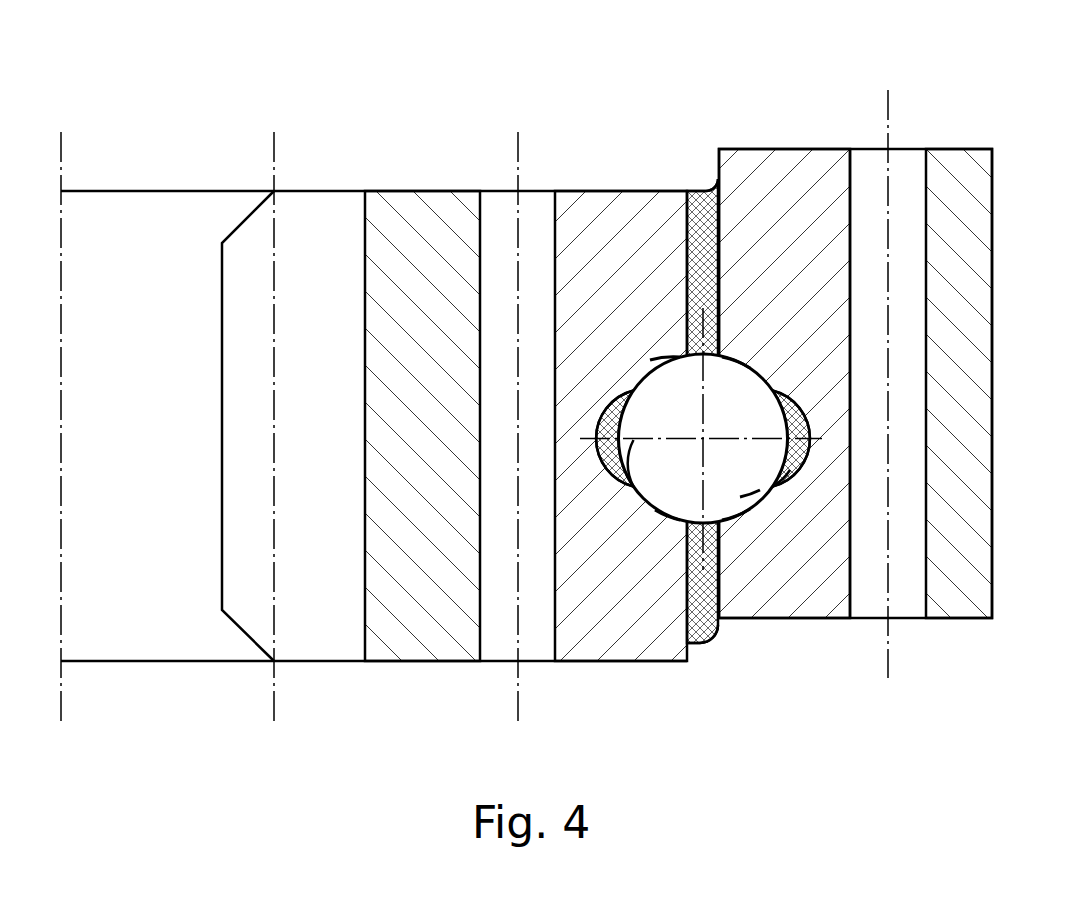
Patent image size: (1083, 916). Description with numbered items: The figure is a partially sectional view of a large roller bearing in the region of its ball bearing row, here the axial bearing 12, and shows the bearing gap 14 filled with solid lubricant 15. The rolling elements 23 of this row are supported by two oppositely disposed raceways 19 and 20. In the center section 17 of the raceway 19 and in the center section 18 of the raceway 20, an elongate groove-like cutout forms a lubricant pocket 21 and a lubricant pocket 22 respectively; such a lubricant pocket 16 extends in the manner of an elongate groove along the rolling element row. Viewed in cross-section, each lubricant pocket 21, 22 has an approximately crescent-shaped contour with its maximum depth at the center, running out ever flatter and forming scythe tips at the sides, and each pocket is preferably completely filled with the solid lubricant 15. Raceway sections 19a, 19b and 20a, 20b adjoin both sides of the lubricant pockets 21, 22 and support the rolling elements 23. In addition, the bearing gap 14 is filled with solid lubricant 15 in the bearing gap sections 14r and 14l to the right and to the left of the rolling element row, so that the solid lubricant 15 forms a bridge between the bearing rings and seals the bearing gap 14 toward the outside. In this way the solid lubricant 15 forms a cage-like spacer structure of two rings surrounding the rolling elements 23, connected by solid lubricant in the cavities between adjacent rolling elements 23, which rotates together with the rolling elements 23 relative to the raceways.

The axial bearing 12 is at (763, 363).
The bearing gap 14 is at (683, 283).
The left bearing gap section 14l is at (700, 237).
The right bearing gap section 14r is at (688, 645).
The solid lubricant 15 is at (717, 188).
The lubricant pocket 16 is at (800, 483).
The center section of raceway 17 is at (587, 463).
The center section of raceway 18 is at (813, 400).
The raceway 19 is at (640, 510).
The raceway section 19a is at (665, 525).
The raceway section 19b is at (663, 364).
The raceway 20 is at (755, 310).
The raceway section 20a is at (738, 518).
The raceway section 20b is at (733, 362).
The lubricant pocket 21 is at (613, 413).
The lubricant pocket 22 is at (797, 457).
The rolling elements 23 is at (750, 488).